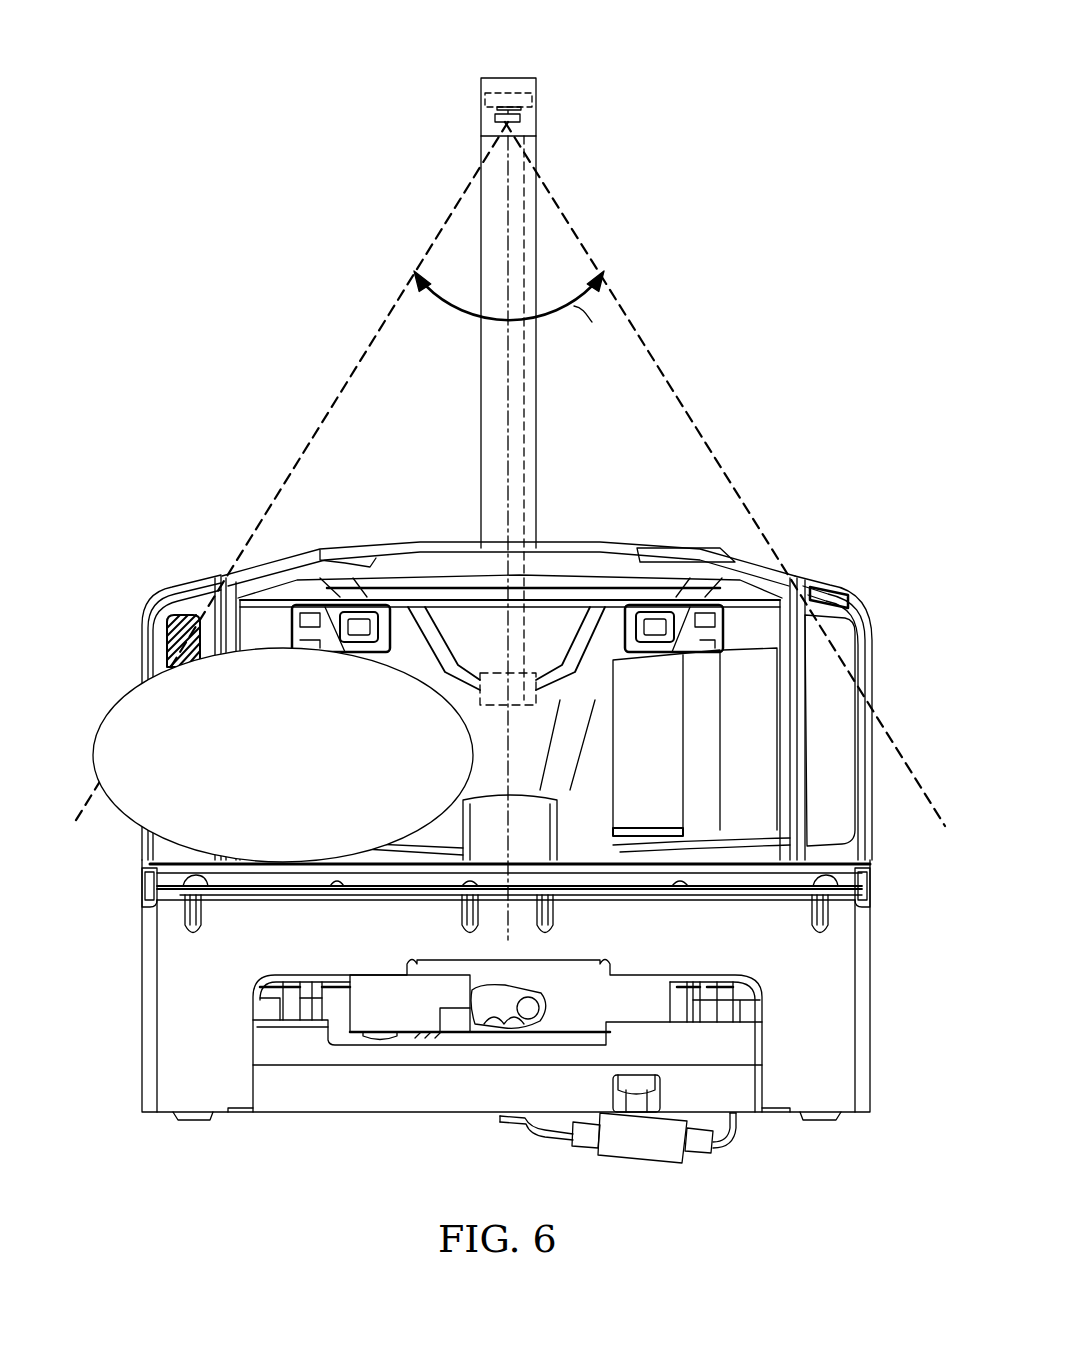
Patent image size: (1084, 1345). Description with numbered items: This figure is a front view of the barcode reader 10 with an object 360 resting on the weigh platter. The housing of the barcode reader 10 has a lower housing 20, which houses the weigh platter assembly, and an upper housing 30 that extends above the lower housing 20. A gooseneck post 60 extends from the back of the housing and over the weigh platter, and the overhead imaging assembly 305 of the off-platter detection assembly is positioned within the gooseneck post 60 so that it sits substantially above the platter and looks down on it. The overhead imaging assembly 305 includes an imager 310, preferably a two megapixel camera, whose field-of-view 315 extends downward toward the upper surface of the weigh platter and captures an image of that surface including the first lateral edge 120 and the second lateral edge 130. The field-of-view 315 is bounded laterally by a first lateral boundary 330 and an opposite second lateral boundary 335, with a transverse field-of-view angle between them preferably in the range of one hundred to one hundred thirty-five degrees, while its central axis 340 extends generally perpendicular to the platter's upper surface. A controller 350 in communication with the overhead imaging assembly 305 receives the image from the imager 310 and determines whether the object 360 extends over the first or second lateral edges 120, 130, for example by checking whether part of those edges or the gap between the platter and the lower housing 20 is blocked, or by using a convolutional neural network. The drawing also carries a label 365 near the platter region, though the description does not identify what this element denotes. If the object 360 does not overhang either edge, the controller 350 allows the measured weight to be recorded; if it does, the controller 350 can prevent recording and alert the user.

The barcode reader 10 is at (270, 76).
The lower housing 20 is at (140, 1028).
The upper housing 30 is at (194, 577).
The gooseneck post 60 is at (462, 116).
The first lateral edge 120 is at (872, 882).
The second lateral edge 130 is at (140, 880).
The overhead imaging assembly 305 is at (462, 88).
The imager 310 is at (521, 112).
The field-of-view 315 is at (630, 395).
The first lateral boundary 330 is at (727, 476).
The second lateral boundary 335 is at (370, 362).
The central axis 340 is at (506, 385).
The controller 350 is at (530, 706).
The object 360 is at (118, 706).
The deck 365 is at (287, 858).